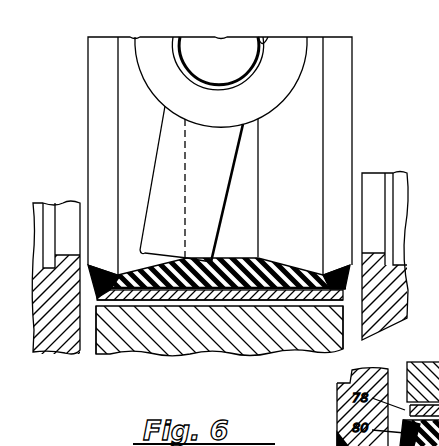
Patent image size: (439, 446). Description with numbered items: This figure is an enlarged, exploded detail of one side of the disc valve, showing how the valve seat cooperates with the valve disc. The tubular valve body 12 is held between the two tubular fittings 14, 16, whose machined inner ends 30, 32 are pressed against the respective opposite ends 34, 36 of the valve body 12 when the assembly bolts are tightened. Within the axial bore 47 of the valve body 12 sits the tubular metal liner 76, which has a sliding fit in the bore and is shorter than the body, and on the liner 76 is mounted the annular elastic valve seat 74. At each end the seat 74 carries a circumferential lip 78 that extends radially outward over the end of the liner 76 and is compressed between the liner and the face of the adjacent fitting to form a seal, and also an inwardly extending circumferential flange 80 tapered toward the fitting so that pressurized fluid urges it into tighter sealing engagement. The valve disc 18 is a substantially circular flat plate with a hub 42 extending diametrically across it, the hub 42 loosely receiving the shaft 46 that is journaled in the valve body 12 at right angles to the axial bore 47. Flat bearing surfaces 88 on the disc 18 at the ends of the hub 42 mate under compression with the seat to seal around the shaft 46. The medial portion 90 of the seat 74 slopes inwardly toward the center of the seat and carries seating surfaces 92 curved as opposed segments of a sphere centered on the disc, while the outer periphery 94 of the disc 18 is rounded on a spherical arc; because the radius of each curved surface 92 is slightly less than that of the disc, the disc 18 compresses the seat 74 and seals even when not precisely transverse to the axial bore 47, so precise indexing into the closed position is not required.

The tubular valve body 12 is at (157, 358).
The tubular fitting 14 is at (42, 279).
The tubular fitting 16 is at (395, 291).
The valve disc 18 is at (218, 187).
The inner end of fitting 30 is at (82, 356).
The inner end of fitting 32 is at (363, 334).
The end of valve body 34 is at (92, 358).
The end of valve body 36 is at (348, 348).
The hub 42 is at (153, 99).
The shaft 46 is at (230, 65).
The axial bore 47 is at (286, 320).
The annular valve seat 74 is at (245, 285).
The metal liner 76 is at (170, 296).
The circumferential lip 78 is at (97, 296).
The circumferential flange 80 is at (105, 272).
The bearing surface 88 is at (272, 96).
The medial portion 90 is at (279, 268).
The seating surface 92 is at (227, 258).
The outer periphery 94 is at (143, 253).